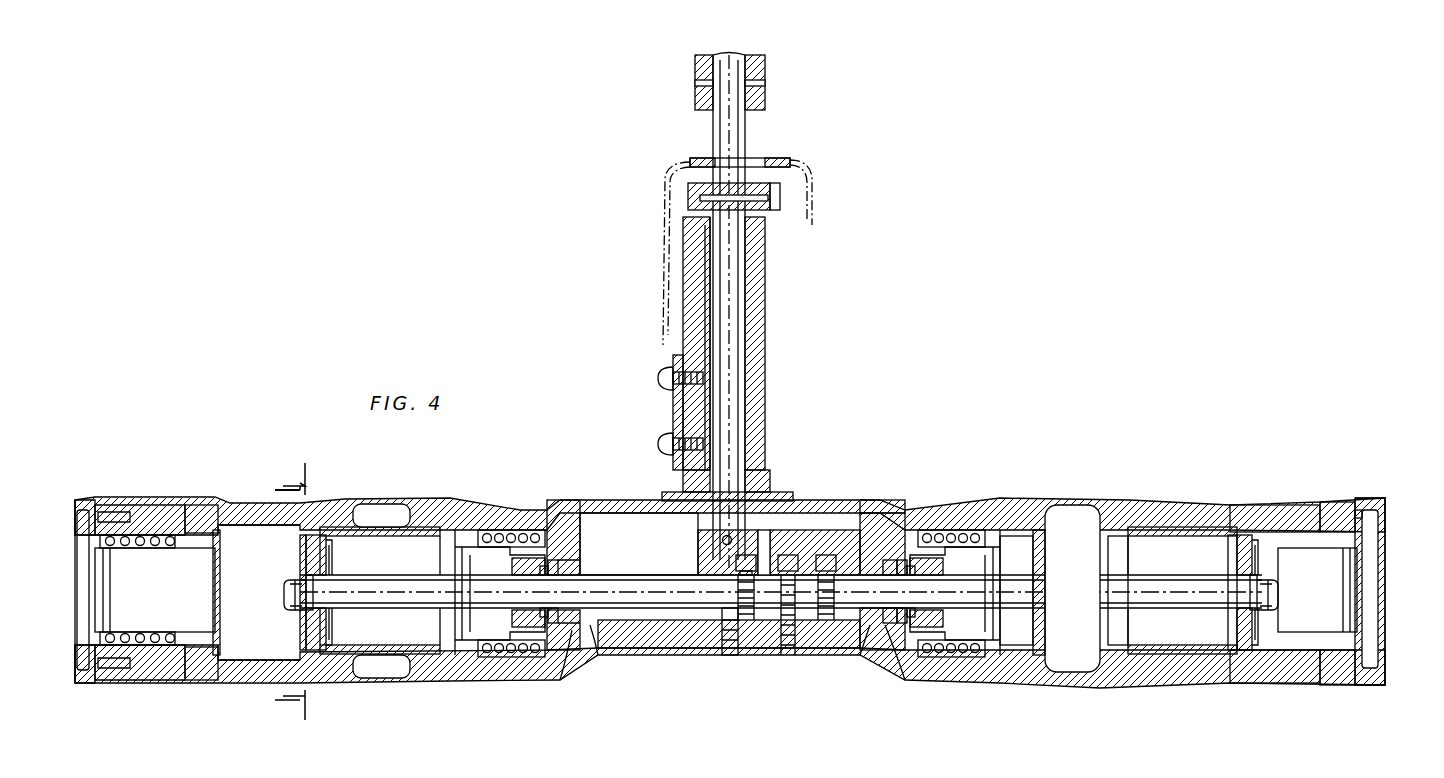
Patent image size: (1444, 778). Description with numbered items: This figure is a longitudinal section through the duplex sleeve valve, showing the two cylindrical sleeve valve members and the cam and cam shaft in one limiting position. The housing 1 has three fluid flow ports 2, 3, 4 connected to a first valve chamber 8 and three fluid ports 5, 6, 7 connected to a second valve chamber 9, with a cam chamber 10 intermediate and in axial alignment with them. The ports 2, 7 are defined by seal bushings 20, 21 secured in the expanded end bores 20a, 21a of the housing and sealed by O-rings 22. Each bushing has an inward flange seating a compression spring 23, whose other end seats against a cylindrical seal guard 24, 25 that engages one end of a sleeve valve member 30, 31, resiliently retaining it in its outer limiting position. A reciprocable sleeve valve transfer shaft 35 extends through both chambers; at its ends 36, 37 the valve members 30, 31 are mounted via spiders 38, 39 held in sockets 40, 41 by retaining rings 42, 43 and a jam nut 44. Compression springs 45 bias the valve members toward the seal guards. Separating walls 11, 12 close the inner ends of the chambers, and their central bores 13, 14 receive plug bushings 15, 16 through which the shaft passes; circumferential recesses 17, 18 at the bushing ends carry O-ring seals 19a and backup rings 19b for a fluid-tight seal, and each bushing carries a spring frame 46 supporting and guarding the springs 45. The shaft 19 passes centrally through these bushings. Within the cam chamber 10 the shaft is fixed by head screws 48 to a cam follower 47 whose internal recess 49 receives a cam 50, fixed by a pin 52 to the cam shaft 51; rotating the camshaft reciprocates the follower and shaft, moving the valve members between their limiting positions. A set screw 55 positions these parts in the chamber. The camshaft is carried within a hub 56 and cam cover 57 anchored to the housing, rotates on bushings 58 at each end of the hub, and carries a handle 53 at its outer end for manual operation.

The housing 1 is at (730, 592).
The fluid flow port 2 is at (1385, 584).
The fluid flow port 3 is at (1072, 520).
The fluid flow port 4 is at (1200, 515).
The fluid port 5 is at (243, 522).
The fluid port 6 is at (383, 515).
The fluid port 7 is at (290, 592).
The first valve chamber 8 is at (1317, 590).
The second valve chamber 9 is at (155, 590).
The cam chamber 10 is at (639, 544).
The separating wall 11 is at (893, 512).
The separating wall 12 is at (556, 512).
The central cylindrical bore 13 is at (881, 615).
The central cylindrical bore 14 is at (568, 622).
The plug bushing 15 is at (865, 615).
The plug bushing 16 is at (580, 616).
The circumferential recess 17 is at (562, 572).
The circumferential recess 18 is at (880, 573).
The shaft 19 is at (781, 591).
The O-ring seal 19a is at (560, 574).
The backup ring 19b is at (545, 575).
The seal bushing 20 is at (1370, 505).
The expanded end bore 20a is at (1340, 510).
The seal bushing 21 is at (88, 510).
The expanded end bore 21a is at (120, 515).
The O-ring 22 is at (115, 513).
The compression spring 23 is at (126, 545).
The seal guard 24 is at (1275, 530).
The seal guard 25 is at (225, 532).
The sleeve valve member 30 is at (1172, 645).
The sleeve valve member 31 is at (410, 645).
The sleeve valve transfer shaft 35 is at (390, 576).
The shaft end 36 is at (1279, 591).
The shaft end 37 is at (284, 592).
The spider 38 is at (1237, 558).
The spider 39 is at (322, 612).
The socket 40 is at (1240, 640).
The socket 41 is at (322, 545).
The retaining ring 42 is at (1258, 621).
The retaining ring 43 is at (302, 558).
The jam nut 44 is at (300, 600).
The compression spring 45 is at (507, 528).
The spring frame 46 is at (500, 548).
The cam follower 47 is at (866, 576).
The head screw 48 is at (750, 572).
The internal recess 49 is at (700, 553).
The cam 50 is at (833, 532).
The cam shaft 51 is at (742, 352).
The pin 52 is at (722, 540).
The handle 53 is at (697, 110).
The set screw 55 is at (790, 618).
The hub 56 is at (760, 387).
The cam cover 57 is at (876, 508).
The bushing 58 is at (757, 258).